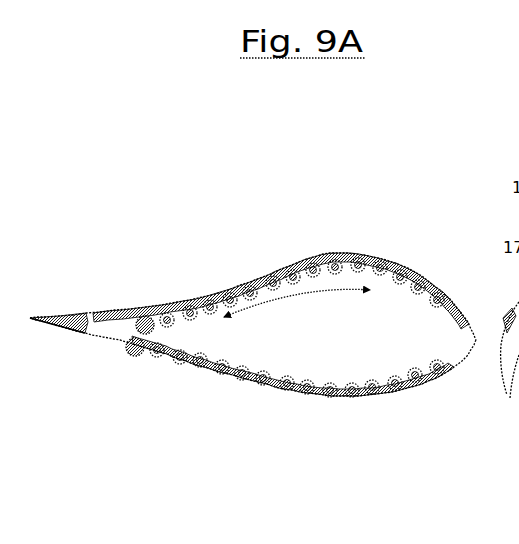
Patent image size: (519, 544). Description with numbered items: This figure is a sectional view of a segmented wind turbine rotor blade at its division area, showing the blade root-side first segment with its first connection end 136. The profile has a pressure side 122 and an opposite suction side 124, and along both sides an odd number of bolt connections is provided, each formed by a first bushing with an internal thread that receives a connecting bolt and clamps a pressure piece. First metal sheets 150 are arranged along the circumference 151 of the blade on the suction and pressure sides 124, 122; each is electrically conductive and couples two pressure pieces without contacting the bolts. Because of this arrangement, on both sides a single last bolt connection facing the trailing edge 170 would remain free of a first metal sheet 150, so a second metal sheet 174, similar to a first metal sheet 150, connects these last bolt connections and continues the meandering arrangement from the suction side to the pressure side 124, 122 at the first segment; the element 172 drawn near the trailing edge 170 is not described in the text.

The pressure side 122 is at (240, 280).
The suction side 124 is at (340, 400).
The first connection end 136 is at (372, 346).
The first metal sheet 150 is at (388, 262).
The circumference 151 is at (297, 310).
The trailing edge 170 is at (42, 324).
The trailing edge gap 172 is at (477, 345).
The second metal sheet 174 is at (103, 334).